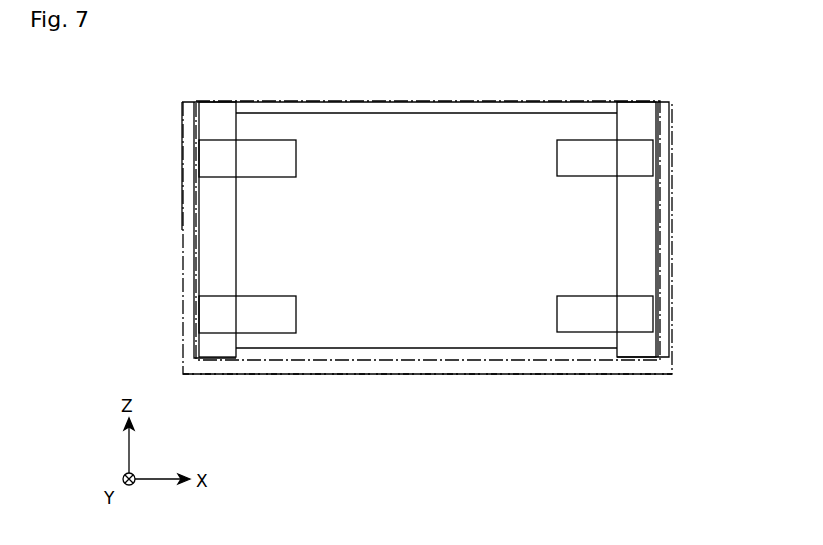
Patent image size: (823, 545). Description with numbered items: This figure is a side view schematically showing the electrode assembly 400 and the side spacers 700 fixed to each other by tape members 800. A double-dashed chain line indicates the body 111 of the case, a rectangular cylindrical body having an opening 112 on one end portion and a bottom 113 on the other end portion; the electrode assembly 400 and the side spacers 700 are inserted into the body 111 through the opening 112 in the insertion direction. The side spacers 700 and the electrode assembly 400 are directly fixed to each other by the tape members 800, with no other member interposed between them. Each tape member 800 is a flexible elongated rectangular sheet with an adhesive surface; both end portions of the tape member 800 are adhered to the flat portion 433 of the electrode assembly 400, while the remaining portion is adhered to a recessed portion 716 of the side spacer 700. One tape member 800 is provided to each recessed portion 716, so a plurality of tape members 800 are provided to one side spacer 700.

The body 111 is at (672, 251).
The opening 112 is at (530, 101).
The bottom 113 is at (397, 374).
The electrode assembly 400 is at (363, 347).
The flat portion 433 is at (378, 128).
The side spacer 700 is at (215, 101).
The recessed portion 716 is at (194, 150).
The tape member 800 is at (215, 176).